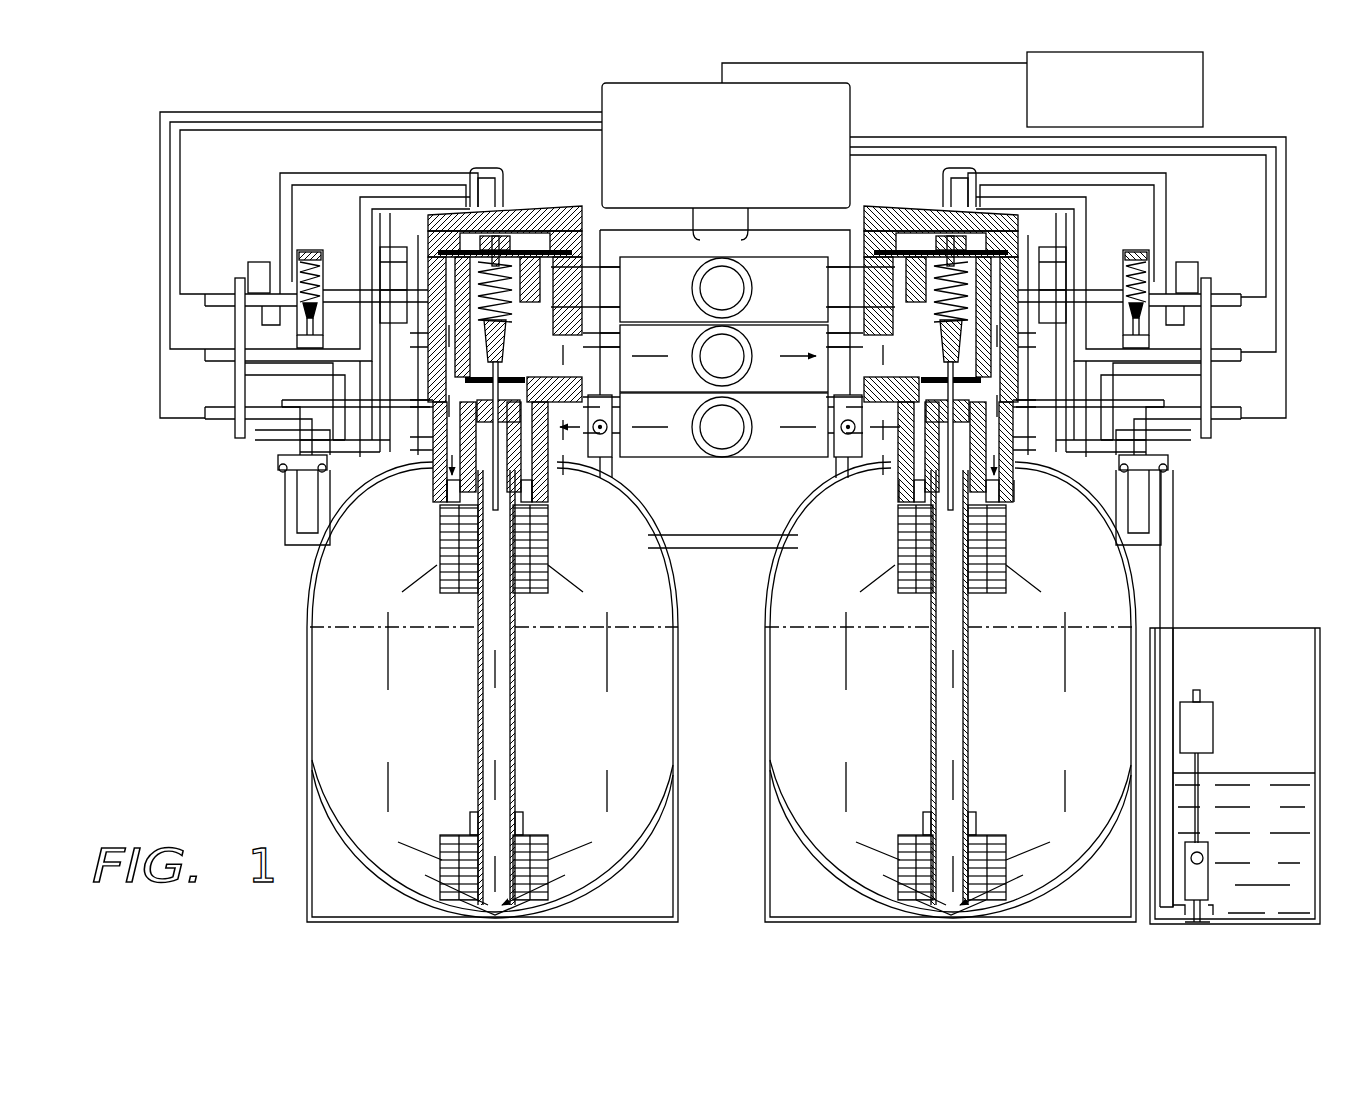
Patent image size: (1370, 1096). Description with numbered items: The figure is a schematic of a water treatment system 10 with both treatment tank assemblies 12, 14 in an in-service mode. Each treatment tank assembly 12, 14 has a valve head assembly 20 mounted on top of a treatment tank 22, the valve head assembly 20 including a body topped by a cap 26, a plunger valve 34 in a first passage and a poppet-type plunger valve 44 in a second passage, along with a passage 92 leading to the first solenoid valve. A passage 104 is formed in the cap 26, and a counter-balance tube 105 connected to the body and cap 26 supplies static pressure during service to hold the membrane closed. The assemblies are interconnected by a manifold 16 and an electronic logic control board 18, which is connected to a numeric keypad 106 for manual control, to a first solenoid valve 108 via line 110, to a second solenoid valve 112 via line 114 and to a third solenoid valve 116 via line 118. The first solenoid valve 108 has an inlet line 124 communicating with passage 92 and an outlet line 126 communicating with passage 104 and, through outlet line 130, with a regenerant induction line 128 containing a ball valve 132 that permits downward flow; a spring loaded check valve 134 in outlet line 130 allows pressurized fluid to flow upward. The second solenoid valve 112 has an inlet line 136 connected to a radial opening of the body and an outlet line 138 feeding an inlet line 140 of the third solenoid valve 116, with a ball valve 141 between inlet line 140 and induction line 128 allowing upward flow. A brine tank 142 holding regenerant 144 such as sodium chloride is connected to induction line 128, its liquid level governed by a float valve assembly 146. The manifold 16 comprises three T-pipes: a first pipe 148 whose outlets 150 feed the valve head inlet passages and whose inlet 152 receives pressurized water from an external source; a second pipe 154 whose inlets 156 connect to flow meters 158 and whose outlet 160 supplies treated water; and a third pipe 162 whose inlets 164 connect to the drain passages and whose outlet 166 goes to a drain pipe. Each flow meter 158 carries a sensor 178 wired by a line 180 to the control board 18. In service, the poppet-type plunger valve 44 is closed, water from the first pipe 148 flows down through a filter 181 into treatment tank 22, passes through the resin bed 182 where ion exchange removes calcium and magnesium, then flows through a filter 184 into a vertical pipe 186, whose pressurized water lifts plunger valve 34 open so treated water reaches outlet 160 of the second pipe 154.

The water treatment system 10 is at (1270, 117).
The treatment tank assembly 12 is at (455, 103).
The treatment tank assembly 14 is at (947, 126).
The manifold 16 is at (742, 480).
The electronic logic control board 18 is at (610, 95).
The valve head assembly 20 is at (380, 262).
The treatment tank 22 is at (765, 690).
The cap 26 is at (532, 208).
The plunger valve 34 is at (920, 500).
The poppet-type plunger valve 44 is at (975, 380).
The passage 92 is at (1040, 290).
The passage 104 is at (480, 170).
The counter-balance tube 105 is at (392, 180).
The numeric keypad 106 is at (1200, 98).
The first solenoid valve 108 is at (222, 295).
The line 110 is at (236, 130).
The second solenoid valve 112 is at (215, 350).
The line 114 is at (168, 322).
The third solenoid valve 116 is at (212, 408).
The line 118 is at (165, 420).
The inlet line 124 is at (1098, 292).
The outlet line 126 is at (1170, 210).
The regenerant induction line 128 is at (283, 523).
The outlet line 130 is at (1225, 374).
The ball valve 132 is at (1168, 472).
The pilot check valve 134 is at (1140, 253).
The inlet line 136 is at (1120, 405).
The outlet line 138 is at (1092, 377).
The inlet line 140 is at (1098, 455).
The ball valve 141 is at (1130, 480).
The brine tank 142 is at (1318, 660).
The regenerant 144 is at (1290, 828).
The float valve assembly 146 is at (1217, 715).
The first pipe 148 is at (675, 387).
The outlets 150 is at (630, 356).
The inlet 152 is at (750, 366).
The second pipe 154 is at (675, 452).
The inlets 156 is at (630, 425).
The flow meters 158 is at (608, 457).
The outlet 160 is at (722, 457).
The third pipe 162 is at (675, 312).
The inlets 164 is at (630, 285).
The outlet 166 is at (750, 293).
The sensor 178 is at (615, 480).
The line 180 is at (760, 235).
The filter 181 is at (549, 550).
The resin bed 182 is at (603, 749).
The filter 184 is at (900, 852).
The vertical pipe 186 is at (477, 712).